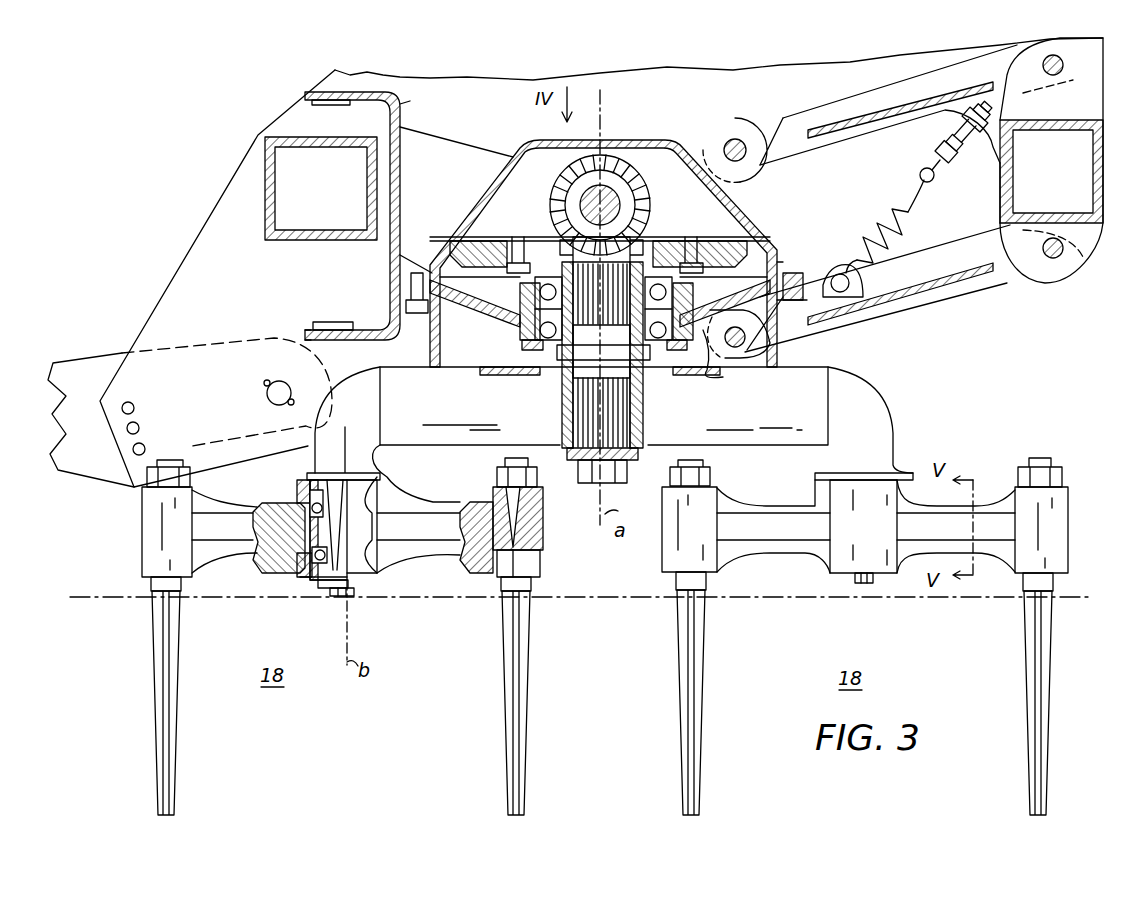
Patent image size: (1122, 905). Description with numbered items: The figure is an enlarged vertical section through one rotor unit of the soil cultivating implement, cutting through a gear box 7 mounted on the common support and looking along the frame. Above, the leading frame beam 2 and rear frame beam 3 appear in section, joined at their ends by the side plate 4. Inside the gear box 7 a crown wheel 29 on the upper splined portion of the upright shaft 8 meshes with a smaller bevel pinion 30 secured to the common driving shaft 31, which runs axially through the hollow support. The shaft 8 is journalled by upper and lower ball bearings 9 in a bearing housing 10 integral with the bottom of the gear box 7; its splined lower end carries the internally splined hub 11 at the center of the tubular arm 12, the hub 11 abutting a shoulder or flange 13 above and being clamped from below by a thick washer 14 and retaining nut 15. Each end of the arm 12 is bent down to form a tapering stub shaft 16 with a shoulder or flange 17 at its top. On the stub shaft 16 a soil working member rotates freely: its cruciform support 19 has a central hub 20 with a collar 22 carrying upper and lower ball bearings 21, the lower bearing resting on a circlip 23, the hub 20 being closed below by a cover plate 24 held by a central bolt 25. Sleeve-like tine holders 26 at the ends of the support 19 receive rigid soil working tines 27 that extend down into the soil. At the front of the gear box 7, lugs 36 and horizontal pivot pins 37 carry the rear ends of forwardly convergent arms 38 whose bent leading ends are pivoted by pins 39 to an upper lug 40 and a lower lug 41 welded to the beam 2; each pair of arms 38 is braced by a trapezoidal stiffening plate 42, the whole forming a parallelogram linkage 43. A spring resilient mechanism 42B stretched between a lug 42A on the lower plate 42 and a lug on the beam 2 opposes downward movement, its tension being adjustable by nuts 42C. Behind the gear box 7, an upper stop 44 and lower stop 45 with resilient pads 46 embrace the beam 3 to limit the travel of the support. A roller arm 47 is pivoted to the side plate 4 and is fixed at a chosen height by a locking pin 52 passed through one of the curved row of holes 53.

The frame beam 2 is at (982, 148).
The frame beam 3 is at (266, 200).
The side plate 4 is at (197, 250).
The gear box 7 is at (640, 148).
The shaft 8 is at (585, 401).
The ball bearing 9 is at (535, 302).
The bearing housing 10 is at (498, 312).
The hub 11 is at (685, 419).
The tubular arm 12 is at (797, 454).
The shoulder or flange 13 is at (585, 355).
The thick washer 14 is at (640, 458).
The retaining nut 15 is at (590, 470).
The stub shaft 16 is at (335, 538).
The shoulder or flange 17 is at (340, 460).
The support 19 is at (434, 502).
The hub 20 is at (297, 585).
The ball bearing 21 is at (297, 505).
The collar 22 is at (253, 523).
The circlip 23 is at (348, 542).
The cover plate 24 is at (314, 590).
The central bolt 25 is at (354, 597).
The tine holder 26 is at (143, 519).
The soil working tine 27 is at (152, 661).
The crown wheel 29 is at (492, 240).
The bevel pinion 30 is at (640, 203).
The common driving shaft 31 is at (578, 206).
The lug 36 is at (755, 182).
The pivot pin 37 is at (737, 139).
The arm 38 is at (885, 127).
The pin 39 is at (1085, 83).
The upper lug 40 is at (1051, 171).
The lower lug 41 is at (1088, 252).
The trapezoidal stiffening plate 42 is at (840, 128).
The lug 42A is at (837, 264).
The resilient mechanism 42B is at (860, 234).
The nut 42C is at (950, 100).
The parallelogram linkage 43 is at (997, 304).
The upper stop 44 is at (400, 104).
The lower stop 45 is at (318, 336).
The resilient pad 46 is at (338, 105).
The arm 47 is at (102, 364).
The locking pin 52 is at (136, 403).
The hole 53 is at (143, 446).